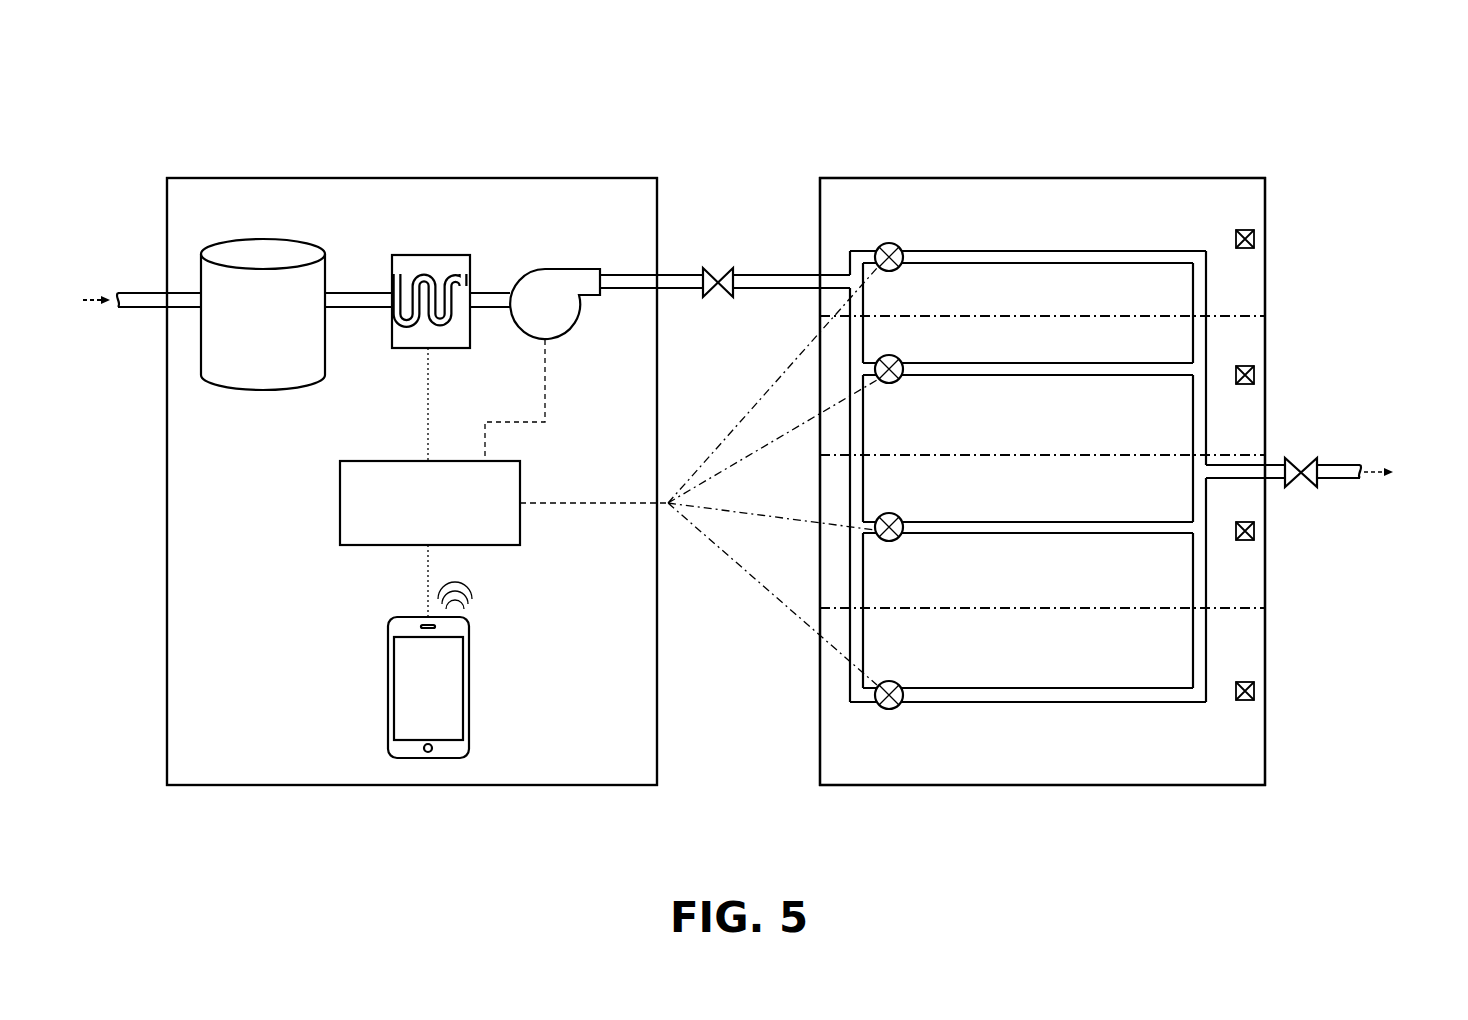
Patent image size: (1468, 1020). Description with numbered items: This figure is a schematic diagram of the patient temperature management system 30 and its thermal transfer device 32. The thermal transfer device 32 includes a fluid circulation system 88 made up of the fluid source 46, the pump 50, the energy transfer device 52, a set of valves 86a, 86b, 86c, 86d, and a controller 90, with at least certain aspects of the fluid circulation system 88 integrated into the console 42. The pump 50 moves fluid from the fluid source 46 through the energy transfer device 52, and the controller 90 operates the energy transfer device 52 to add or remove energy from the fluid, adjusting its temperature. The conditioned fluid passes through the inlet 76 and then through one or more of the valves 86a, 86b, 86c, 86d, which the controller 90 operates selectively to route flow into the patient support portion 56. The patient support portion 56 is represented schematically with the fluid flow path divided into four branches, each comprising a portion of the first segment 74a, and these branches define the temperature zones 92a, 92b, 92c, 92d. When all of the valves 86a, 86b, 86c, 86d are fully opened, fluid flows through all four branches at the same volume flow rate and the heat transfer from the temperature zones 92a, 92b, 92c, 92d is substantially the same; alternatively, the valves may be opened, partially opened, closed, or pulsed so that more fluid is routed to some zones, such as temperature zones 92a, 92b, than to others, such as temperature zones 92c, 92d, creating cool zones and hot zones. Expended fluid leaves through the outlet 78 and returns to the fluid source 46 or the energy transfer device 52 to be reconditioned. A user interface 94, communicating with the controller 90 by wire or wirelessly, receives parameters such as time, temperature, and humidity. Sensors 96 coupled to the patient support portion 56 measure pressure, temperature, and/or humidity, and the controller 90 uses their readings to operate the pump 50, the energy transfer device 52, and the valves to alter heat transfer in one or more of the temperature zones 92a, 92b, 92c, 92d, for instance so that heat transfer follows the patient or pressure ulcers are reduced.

The patient temperature management system 30 is at (1160, 84).
The thermal transfer device 32 is at (1193, 138).
The console 42 is at (553, 170).
The fluid source 46 is at (307, 242).
The pump 50 is at (568, 270).
The energy transfer device 52 is at (440, 255).
The patient support portion 56 is at (1231, 172).
The first segment of the fluid flow path 74a is at (998, 251).
The inlet 76 is at (718, 268).
The outlet 78 is at (1300, 458).
The valve 86a is at (895, 243).
The valve 86b is at (895, 357).
The valve 86c is at (895, 513).
The valve 86d is at (895, 682).
The fluid circulation system 88 is at (850, 210).
The controller 90 is at (365, 460).
The temperature zone 92a is at (1230, 207).
The temperature zone 92b is at (1230, 335).
The temperature zone 92c is at (1228, 556).
The temperature zone 92d is at (1245, 641).
The user interface 94 is at (407, 617).
The sensors 96 is at (1254, 240).